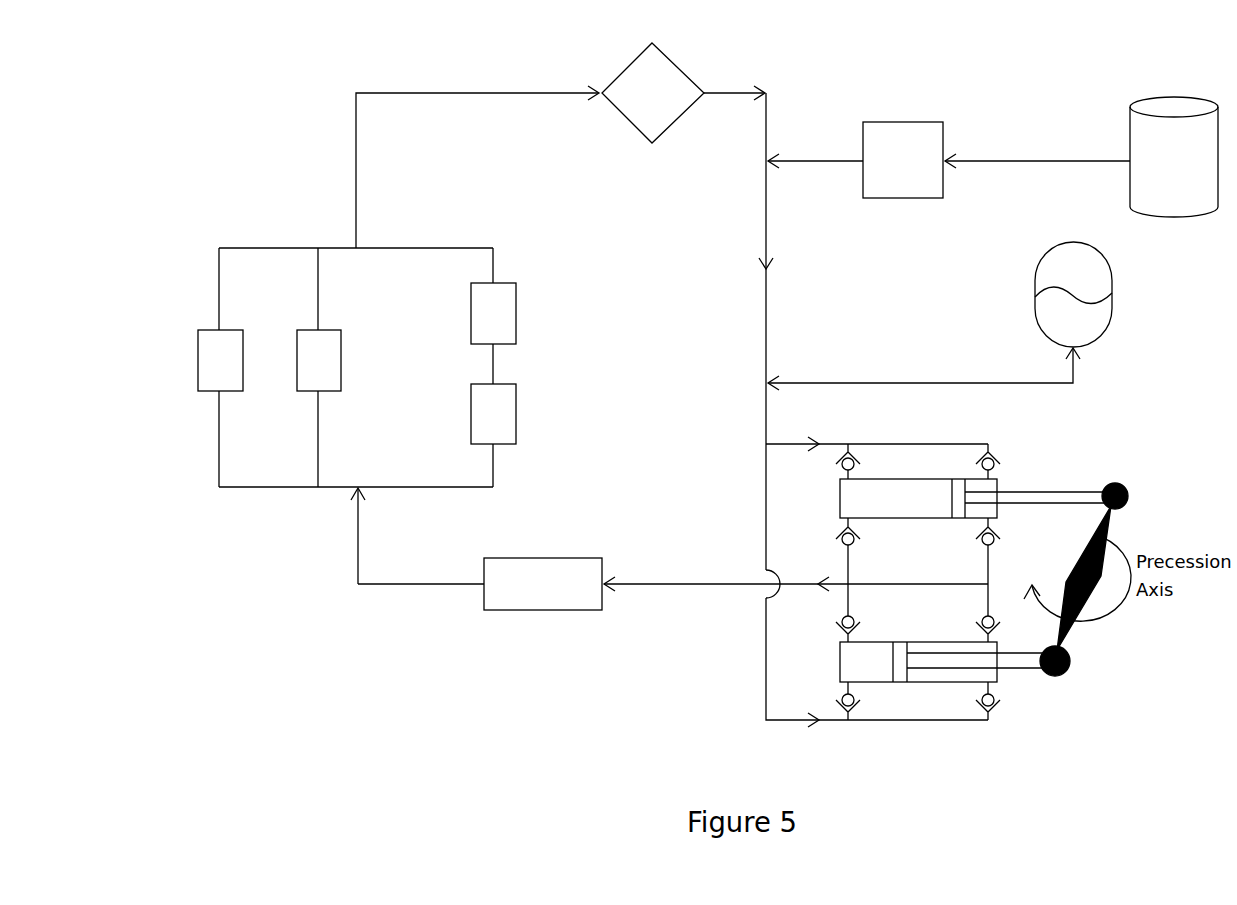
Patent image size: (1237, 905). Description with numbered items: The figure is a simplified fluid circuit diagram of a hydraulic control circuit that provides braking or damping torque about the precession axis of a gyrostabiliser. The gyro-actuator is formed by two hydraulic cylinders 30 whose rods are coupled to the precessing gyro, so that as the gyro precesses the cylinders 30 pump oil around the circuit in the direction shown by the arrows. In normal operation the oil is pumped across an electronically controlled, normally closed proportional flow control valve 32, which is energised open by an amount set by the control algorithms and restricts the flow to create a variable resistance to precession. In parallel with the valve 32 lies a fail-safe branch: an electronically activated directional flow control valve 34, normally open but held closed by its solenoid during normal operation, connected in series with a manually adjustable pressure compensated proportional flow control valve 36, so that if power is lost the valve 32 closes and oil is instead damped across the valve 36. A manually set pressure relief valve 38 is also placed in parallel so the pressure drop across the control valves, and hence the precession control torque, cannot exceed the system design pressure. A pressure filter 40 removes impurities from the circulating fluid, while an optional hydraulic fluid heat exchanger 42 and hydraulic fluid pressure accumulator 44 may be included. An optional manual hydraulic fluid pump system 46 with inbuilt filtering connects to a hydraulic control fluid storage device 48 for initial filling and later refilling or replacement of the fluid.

The hydraulic cylinders 30 is at (1042, 477).
The proportional flow control valve 32 is at (205, 343).
The directional flow control valve 34 is at (505, 410).
The manually adjustable pressure compensated proportional flow control valve 36 is at (508, 305).
The pressure relief valve 38 is at (335, 345).
The pressure filter 40 is at (563, 603).
The hydraulic fluid heat exchanger 42 is at (627, 108).
The hydraulic fluid pressure accumulator 44 is at (1100, 315).
The manual hydraulic fluid pump system 46 is at (930, 139).
The hydraulic control fluid storage device 48 is at (1140, 132).